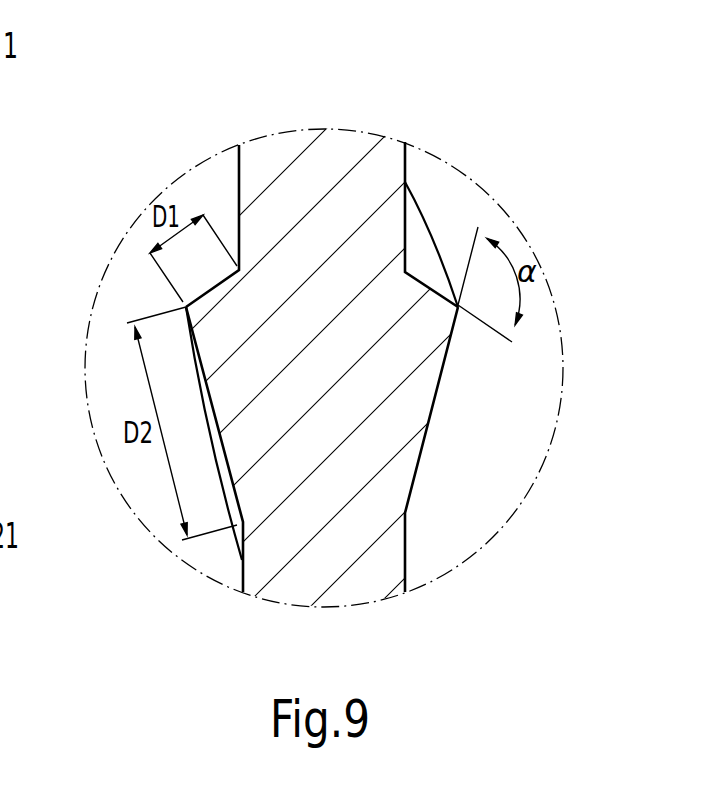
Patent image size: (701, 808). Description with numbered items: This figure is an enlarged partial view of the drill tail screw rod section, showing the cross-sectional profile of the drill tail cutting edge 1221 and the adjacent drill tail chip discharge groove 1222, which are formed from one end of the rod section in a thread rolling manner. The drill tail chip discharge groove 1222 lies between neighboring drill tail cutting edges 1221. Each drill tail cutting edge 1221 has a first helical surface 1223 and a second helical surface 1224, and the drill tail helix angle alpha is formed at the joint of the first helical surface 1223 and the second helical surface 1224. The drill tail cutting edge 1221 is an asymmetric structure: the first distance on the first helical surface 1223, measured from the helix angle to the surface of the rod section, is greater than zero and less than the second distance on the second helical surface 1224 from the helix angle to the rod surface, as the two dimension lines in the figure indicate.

The drill tail cutting edge 1221 is at (186, 307).
The drill tail chip discharge groove 1222 is at (237, 160).
The first helical surface 1223 is at (458, 305).
The second helical surface 1224 is at (432, 417).